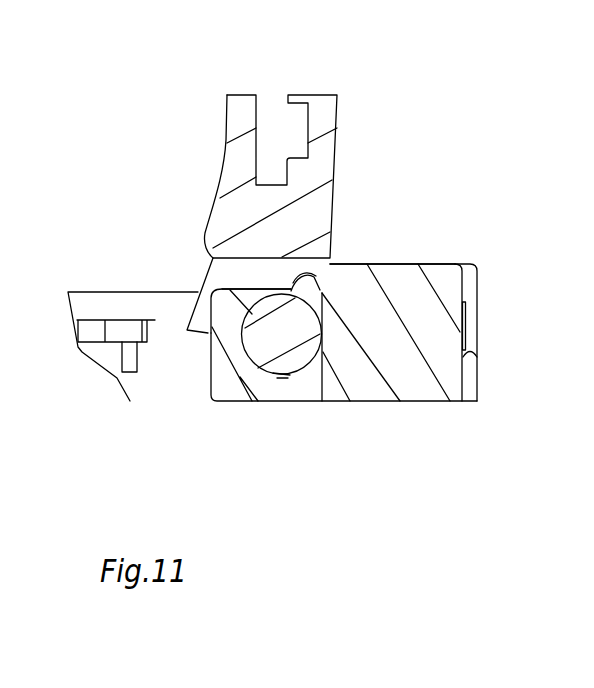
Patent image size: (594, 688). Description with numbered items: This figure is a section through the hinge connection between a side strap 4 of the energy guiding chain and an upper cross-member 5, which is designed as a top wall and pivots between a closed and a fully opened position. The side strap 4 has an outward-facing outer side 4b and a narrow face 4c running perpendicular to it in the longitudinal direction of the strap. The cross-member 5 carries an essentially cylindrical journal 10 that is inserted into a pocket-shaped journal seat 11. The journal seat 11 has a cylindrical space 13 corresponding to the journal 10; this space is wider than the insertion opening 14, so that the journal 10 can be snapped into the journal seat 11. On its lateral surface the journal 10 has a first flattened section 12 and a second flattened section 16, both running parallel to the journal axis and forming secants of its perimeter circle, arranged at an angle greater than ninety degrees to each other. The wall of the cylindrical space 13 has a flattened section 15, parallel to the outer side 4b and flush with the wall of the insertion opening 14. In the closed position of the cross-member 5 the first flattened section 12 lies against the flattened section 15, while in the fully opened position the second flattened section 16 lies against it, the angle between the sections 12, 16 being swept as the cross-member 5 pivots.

The side strap 4 is at (488, 264).
The outer side 4b is at (480, 336).
The narrow face 4c is at (409, 264).
The upper cross-member 5 is at (223, 143).
The journal 10 is at (263, 338).
The journal seat 11 is at (323, 294).
The first flattened section 12 is at (287, 377).
The cylindrical space 13 is at (273, 375).
The insertion opening 14 is at (259, 294).
The flattened section 15 is at (323, 340).
The second flattened section 16 is at (320, 318).